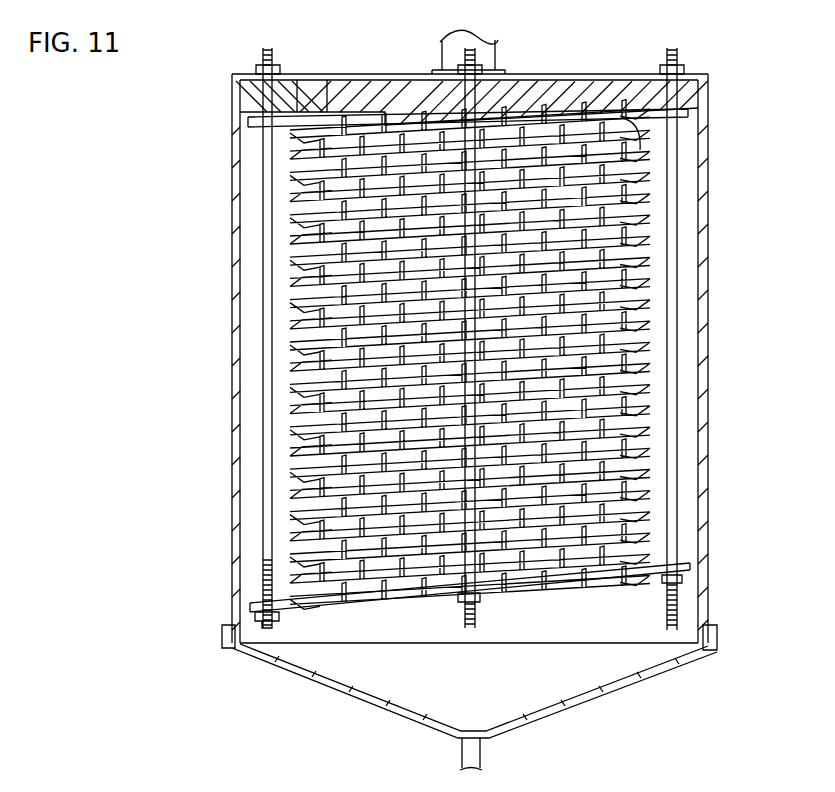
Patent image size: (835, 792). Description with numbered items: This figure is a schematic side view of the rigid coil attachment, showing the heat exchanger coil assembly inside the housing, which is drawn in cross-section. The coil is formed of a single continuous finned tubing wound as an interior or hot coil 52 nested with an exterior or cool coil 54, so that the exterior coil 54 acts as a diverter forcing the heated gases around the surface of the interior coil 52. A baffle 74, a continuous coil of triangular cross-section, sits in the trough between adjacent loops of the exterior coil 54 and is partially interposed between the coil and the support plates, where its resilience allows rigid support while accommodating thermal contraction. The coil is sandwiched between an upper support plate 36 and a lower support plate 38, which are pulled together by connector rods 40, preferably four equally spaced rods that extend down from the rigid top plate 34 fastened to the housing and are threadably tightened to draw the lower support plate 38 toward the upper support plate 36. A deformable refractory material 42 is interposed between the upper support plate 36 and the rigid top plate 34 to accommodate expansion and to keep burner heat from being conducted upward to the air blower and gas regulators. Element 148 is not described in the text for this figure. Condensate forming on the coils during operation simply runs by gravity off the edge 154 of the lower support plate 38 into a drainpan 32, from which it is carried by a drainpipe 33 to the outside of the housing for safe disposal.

The drainpan 32 is at (395, 708).
The drainpipe 33 is at (462, 755).
The rigid top plate 34 is at (395, 72).
The upper support plate 36 is at (248, 122).
The lower support plate 38 is at (250, 606).
The connector rods 40 is at (271, 387).
The refractory material 42 is at (245, 108).
The interior coil 52 is at (363, 583).
The exterior coil 54 is at (300, 545).
The baffle 74 is at (470, 387).
The right tie rod 148 is at (690, 568).
The edge of lower support plate 154 is at (262, 582).